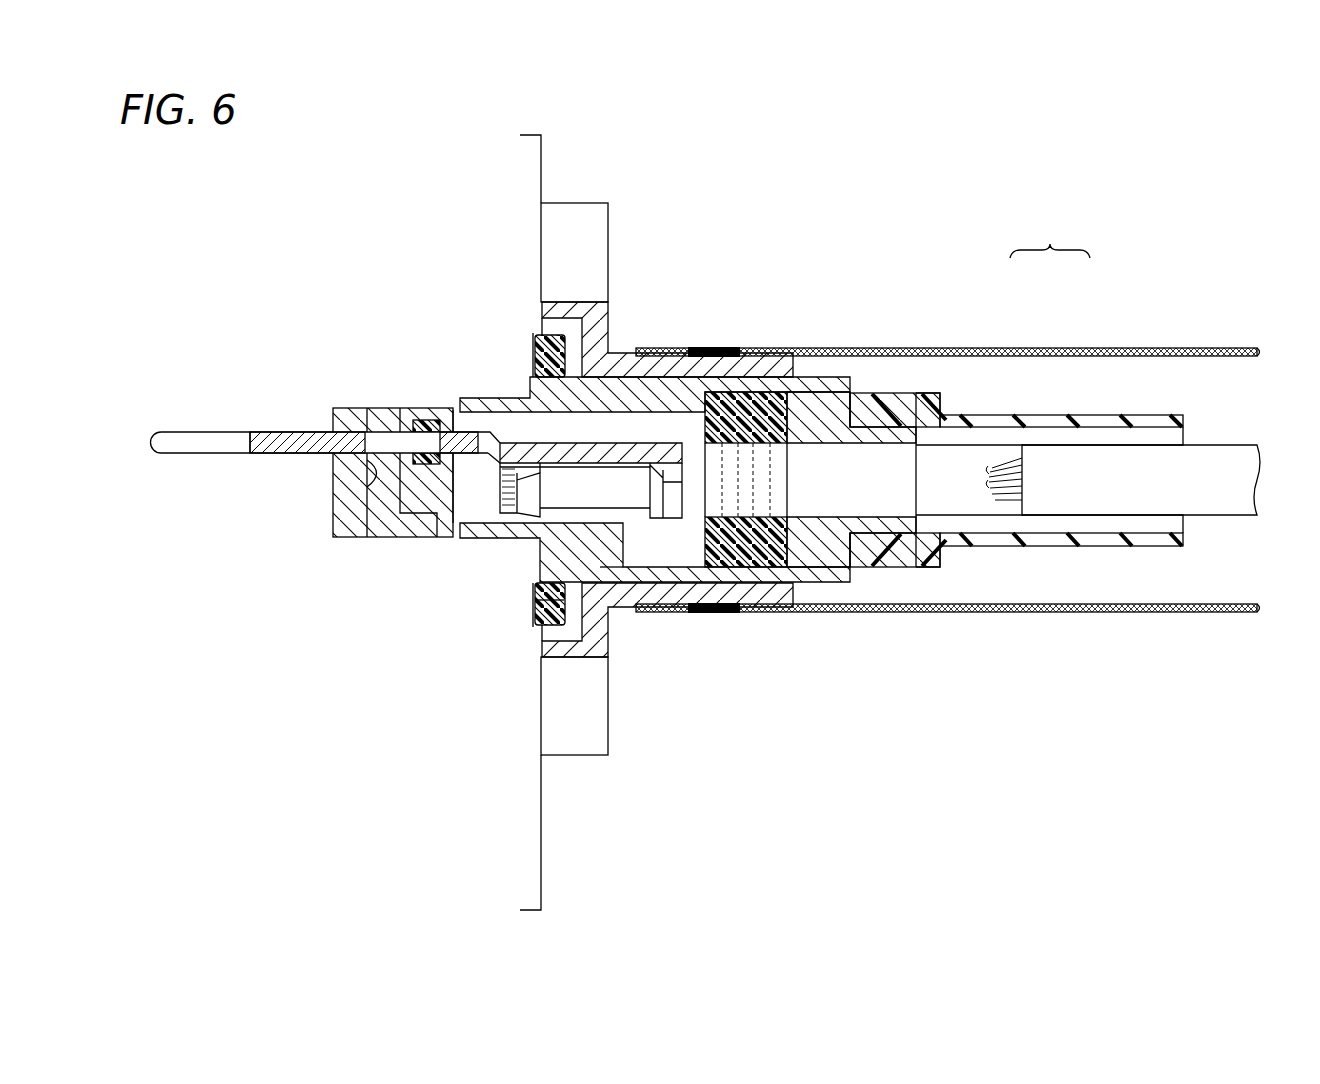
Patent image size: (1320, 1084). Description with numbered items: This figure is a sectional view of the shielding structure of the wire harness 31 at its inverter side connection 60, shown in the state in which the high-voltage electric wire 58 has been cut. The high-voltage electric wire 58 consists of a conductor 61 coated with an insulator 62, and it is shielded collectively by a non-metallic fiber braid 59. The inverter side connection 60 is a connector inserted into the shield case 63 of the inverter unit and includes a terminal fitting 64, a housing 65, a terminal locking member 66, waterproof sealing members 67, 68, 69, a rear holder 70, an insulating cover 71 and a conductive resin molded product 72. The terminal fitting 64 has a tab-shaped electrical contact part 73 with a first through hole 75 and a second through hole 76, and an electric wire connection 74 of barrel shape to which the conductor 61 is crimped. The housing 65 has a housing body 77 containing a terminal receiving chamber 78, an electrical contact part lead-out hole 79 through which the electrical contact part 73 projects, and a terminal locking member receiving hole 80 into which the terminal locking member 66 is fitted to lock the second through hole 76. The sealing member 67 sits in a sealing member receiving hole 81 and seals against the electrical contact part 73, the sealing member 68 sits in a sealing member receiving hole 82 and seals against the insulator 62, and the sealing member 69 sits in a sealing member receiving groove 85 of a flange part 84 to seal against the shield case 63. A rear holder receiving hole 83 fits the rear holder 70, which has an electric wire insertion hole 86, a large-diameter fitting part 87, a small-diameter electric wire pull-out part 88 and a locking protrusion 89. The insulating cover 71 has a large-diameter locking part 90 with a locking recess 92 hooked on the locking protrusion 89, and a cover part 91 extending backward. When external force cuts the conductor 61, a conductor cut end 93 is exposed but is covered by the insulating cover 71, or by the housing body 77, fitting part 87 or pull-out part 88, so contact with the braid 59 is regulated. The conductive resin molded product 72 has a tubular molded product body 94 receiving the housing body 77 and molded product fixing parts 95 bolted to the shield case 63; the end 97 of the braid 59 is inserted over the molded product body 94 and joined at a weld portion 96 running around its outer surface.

The wire harness 31 is at (917, 238).
The high-voltage electric wire 58 is at (1222, 447).
The non-metallic fiber braid 59 is at (1153, 338).
The inverter side connection 60 is at (640, 249).
The conductor 61 is at (497, 497).
The insulator 62 is at (1188, 506).
The shield case 63 is at (544, 856).
The terminal fitting 64 is at (540, 443).
The housing 65 is at (342, 512).
The terminal locking member 66 is at (378, 530).
The waterproof sealing member 67 is at (438, 420).
The waterproof sealing member 68 is at (807, 557).
The waterproof sealing member 69 is at (544, 625).
The rear holder 70 is at (880, 567).
The insulating cover 71 is at (1050, 238).
The conductive resin molded product 72 is at (598, 327).
The electrical contact part 73 is at (268, 433).
The electric wire connection 74 is at (735, 560).
The first through hole 75 is at (190, 433).
The second through hole 76 is at (368, 416).
The housing body 77 is at (608, 565).
The terminal receiving chamber 78 is at (652, 392).
The electrical contact part lead-out hole 79 is at (320, 432).
The terminal locking member receiving hole 80 is at (372, 490).
The sealing member receiving hole 81 is at (416, 421).
The sealing member receiving hole 82 is at (772, 567).
The rear holder receiving hole 83 is at (860, 567).
The flange part 84 is at (564, 640).
The sealing member receiving groove 85 is at (536, 603).
The electric wire insertion hole 86 is at (882, 517).
The large-diameter fitting part 87 is at (822, 410).
The small-diameter electric wire pull-out part 88 is at (898, 396).
The locking protrusion 89 is at (892, 400).
The large-diameter locking part 90 is at (940, 398).
The cover part 91 is at (1080, 420).
The locking recess 92 is at (915, 428).
The conductor cut end 93 is at (1000, 495).
The molded product body 94 is at (658, 596).
The molded product fixing part 95 is at (556, 248).
The weld portion 96 is at (638, 423).
The end 97 is at (648, 352).